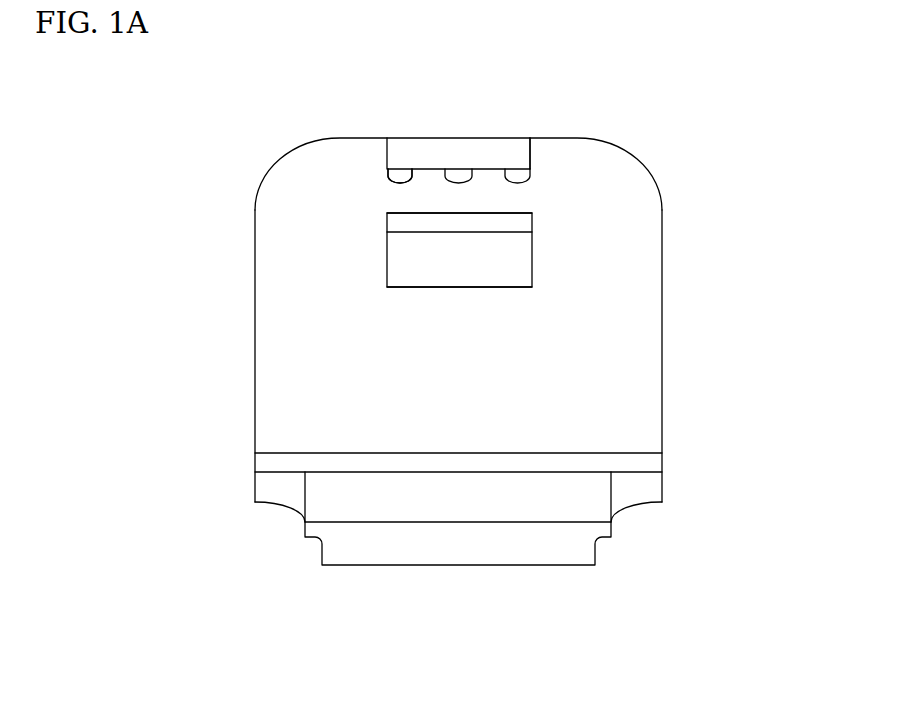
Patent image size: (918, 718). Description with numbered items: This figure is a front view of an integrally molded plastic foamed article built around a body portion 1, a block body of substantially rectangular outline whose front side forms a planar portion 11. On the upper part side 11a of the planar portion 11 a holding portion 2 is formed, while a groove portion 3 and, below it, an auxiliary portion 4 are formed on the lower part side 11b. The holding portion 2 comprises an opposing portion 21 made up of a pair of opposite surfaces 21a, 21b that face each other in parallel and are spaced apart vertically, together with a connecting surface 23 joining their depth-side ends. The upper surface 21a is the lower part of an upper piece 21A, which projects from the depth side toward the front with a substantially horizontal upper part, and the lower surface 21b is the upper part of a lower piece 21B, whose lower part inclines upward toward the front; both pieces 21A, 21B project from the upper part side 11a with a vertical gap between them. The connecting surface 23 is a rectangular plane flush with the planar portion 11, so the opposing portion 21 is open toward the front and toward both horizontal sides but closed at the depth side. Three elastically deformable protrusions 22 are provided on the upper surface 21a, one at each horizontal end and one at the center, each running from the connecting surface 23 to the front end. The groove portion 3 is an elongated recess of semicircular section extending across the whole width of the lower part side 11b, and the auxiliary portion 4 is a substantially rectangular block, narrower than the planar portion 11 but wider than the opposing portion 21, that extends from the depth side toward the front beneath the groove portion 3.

The body portion 1 is at (696, 343).
The holding portion 2 is at (552, 185).
The groove portion 3 is at (650, 462).
The auxiliary portion 4 is at (622, 540).
The planar portion 11 is at (626, 289).
The upper part side 11a is at (676, 203).
The lower part side 11b is at (678, 452).
The opposing portion 21 is at (508, 81).
The upper surface 21a is at (435, 172).
The lower surface 21b is at (490, 213).
The upper piece 21A is at (518, 154).
The lower piece 21B is at (398, 252).
The protrusions 22 is at (392, 180).
The connecting surface 23 is at (398, 200).